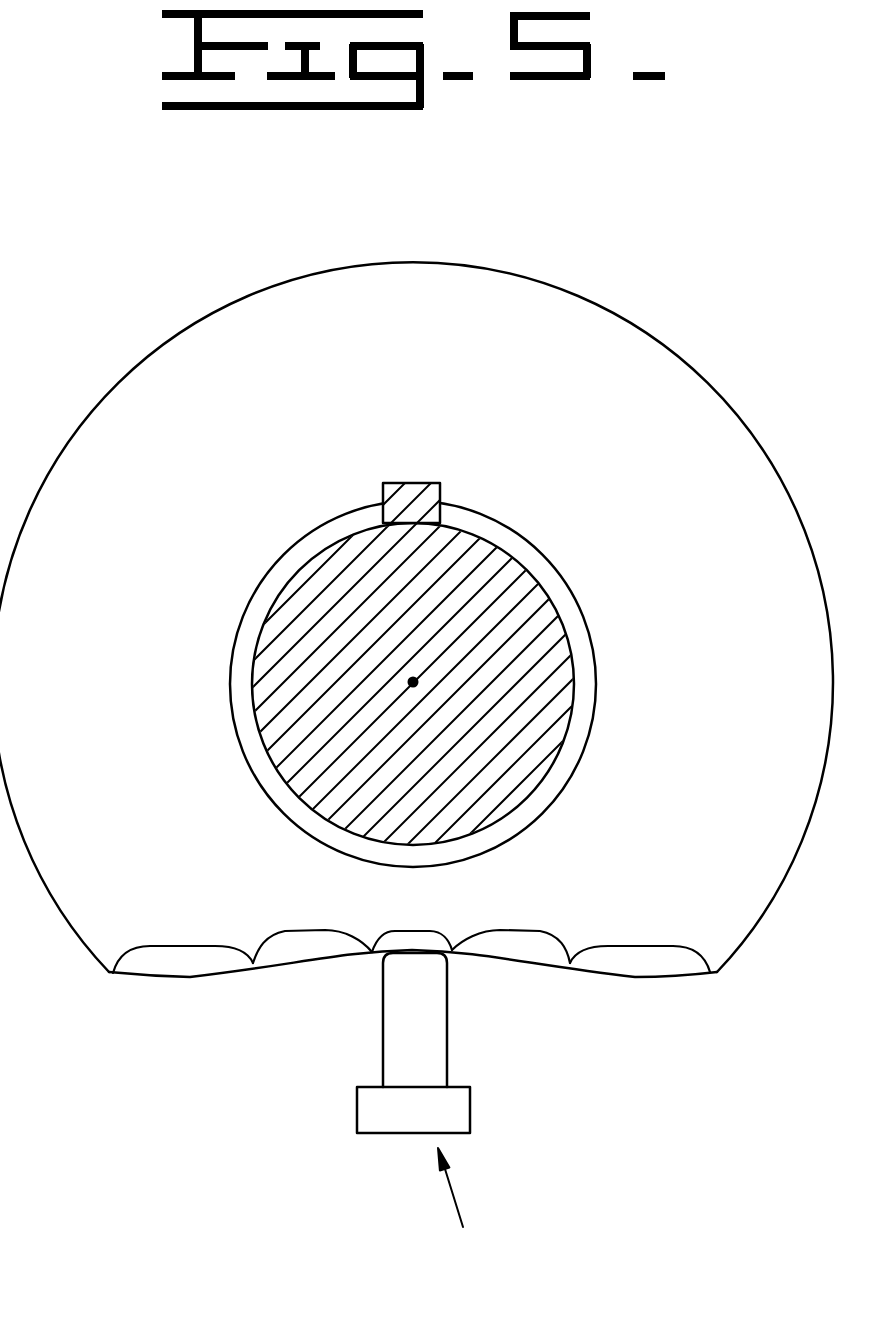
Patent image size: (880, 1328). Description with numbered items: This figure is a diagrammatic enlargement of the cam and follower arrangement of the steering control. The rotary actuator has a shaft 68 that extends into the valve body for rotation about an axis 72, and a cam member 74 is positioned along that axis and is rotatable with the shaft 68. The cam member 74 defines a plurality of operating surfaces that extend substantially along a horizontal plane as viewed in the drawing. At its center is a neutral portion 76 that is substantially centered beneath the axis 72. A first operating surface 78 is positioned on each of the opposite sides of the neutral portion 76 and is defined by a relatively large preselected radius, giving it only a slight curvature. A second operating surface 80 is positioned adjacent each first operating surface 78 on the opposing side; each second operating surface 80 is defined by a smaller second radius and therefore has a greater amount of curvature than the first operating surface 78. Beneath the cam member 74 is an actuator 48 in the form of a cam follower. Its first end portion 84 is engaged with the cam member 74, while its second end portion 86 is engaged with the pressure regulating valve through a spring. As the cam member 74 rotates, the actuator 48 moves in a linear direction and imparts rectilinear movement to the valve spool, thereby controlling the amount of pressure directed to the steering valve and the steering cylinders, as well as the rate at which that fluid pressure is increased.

The cam member 74 is at (424, 401).
The shaft 68 is at (557, 645).
The axis 72 is at (405, 680).
The neutral portion 76 is at (410, 932).
The first operating surface 78 is at (310, 932).
The second operating surface 80 is at (187, 947).
The first end portion 84 is at (410, 965).
The actuator 48 is at (425, 1043).
The second end portion 86 is at (468, 1207).